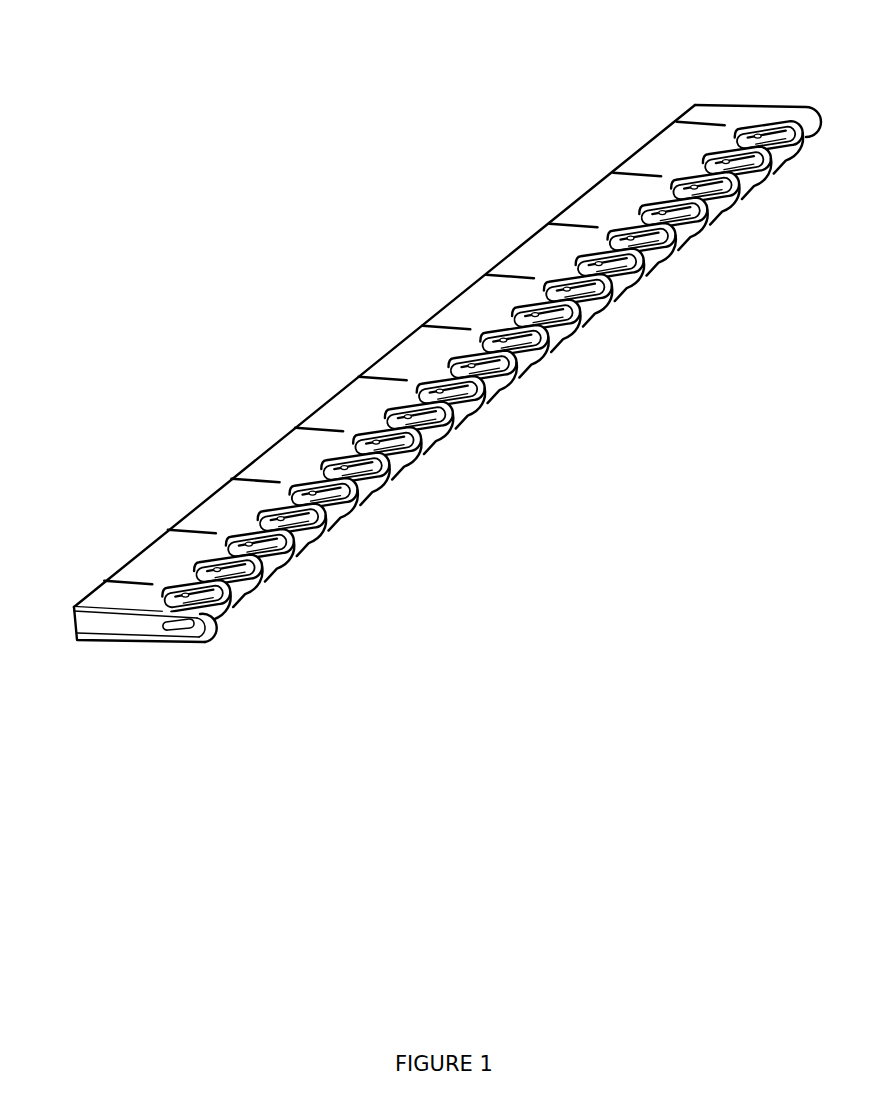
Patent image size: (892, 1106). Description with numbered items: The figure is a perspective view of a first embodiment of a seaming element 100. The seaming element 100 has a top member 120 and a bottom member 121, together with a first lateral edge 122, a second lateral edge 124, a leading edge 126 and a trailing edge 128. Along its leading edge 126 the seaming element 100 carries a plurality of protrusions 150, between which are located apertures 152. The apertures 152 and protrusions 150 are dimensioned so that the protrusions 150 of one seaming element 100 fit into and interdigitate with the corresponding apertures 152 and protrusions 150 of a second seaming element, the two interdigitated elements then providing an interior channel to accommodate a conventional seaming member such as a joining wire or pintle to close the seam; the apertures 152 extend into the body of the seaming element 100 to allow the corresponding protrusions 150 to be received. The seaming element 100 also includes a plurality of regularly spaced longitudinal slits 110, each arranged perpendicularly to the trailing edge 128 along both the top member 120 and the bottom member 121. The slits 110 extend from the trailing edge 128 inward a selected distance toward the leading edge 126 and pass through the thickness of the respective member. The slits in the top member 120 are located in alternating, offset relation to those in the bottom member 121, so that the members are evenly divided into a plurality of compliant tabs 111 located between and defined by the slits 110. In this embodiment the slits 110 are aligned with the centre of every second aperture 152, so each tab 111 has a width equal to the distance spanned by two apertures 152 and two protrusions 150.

The seaming element 100 is at (431, 383).
The longitudinal slits 110 is at (485, 374).
The compliant tabs 111 is at (480, 305).
The top member 120 is at (667, 157).
The bottom member 121 is at (161, 652).
The first lateral edge 122 is at (138, 614).
The second lateral edge 124 is at (730, 103).
The leading edge 126 is at (679, 254).
The trailing edge 128 is at (185, 517).
The protrusions 150 is at (400, 460).
The apertures 152 is at (490, 388).